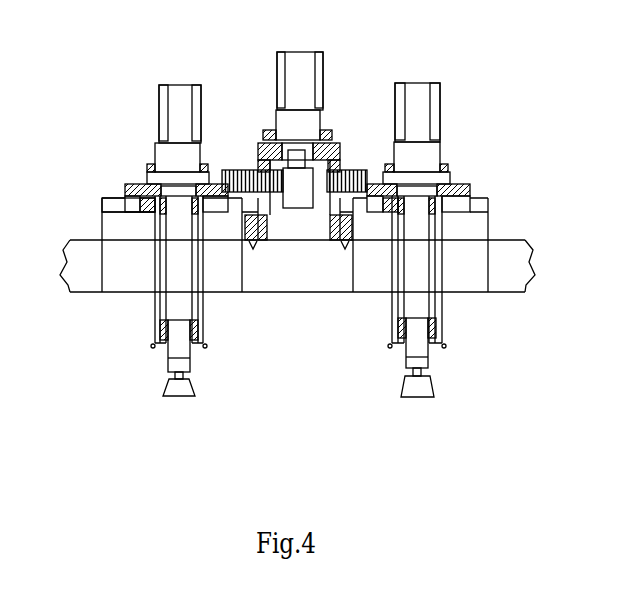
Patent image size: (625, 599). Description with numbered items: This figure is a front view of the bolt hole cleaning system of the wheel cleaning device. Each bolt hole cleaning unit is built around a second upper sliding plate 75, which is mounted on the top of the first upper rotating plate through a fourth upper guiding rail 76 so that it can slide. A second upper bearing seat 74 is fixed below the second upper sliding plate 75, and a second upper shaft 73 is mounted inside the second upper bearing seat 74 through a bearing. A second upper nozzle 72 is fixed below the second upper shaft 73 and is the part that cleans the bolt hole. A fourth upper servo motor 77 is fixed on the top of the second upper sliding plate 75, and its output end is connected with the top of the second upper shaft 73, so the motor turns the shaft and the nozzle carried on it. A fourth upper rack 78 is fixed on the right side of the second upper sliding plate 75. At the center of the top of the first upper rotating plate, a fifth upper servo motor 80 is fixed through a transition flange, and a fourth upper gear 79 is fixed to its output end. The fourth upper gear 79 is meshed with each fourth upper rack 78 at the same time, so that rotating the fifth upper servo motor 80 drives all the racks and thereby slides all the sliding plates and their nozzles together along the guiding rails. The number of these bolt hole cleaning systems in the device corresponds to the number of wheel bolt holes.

The second upper nozzle 72 is at (178, 385).
The second upper shaft 73 is at (178, 303).
The second upper bearing seat 74 is at (157, 267).
The second upper sliding plate 75 is at (143, 207).
The fourth upper guiding rail 76 is at (128, 208).
The fourth upper servo motor 77 is at (172, 123).
The fourth upper rack 78 is at (247, 188).
The fourth upper gear 79 is at (298, 188).
The fifth upper servo motor 80 is at (300, 108).